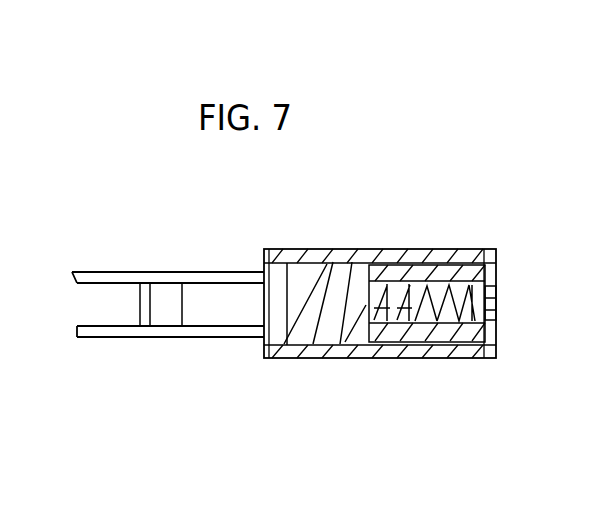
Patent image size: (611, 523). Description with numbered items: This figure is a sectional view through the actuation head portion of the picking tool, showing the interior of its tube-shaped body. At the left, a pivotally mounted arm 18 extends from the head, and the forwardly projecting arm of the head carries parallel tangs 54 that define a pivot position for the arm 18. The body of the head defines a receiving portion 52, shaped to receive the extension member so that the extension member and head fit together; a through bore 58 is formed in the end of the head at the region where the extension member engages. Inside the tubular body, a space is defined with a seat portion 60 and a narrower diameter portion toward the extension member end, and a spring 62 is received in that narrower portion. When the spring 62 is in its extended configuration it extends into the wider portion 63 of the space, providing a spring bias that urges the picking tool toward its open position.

The parallel tangs 54 is at (92, 272).
The arm 18 is at (182, 272).
The receiving portion 52 is at (487, 252).
The wider portion 63 is at (296, 263).
The spring 62 is at (323, 262).
The seat portion 60 is at (398, 264).
The through bore 58 is at (487, 288).